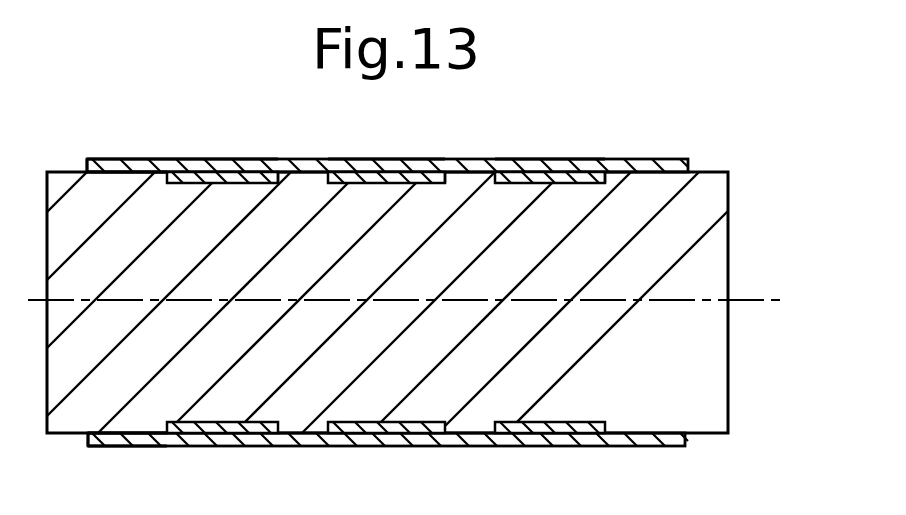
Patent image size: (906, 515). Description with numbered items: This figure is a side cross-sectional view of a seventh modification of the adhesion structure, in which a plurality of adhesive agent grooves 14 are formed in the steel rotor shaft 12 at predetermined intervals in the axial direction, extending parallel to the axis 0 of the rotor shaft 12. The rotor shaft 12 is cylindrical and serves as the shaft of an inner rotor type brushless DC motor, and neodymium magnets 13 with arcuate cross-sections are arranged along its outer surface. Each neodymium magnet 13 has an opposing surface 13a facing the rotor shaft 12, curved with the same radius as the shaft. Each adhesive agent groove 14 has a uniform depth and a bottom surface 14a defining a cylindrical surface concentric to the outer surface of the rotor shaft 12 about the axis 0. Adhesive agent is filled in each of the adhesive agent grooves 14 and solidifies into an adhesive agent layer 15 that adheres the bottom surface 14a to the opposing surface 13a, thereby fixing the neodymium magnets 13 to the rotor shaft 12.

The rotor shaft 12 is at (713, 178).
The neodymium magnet 13 is at (658, 162).
The opposing surface 13a is at (120, 178).
The adhesive agent groove 14 is at (186, 176).
The bottom surface 14a is at (268, 184).
The adhesive agent layer 15 is at (228, 172).
The axis 0 is at (752, 300).